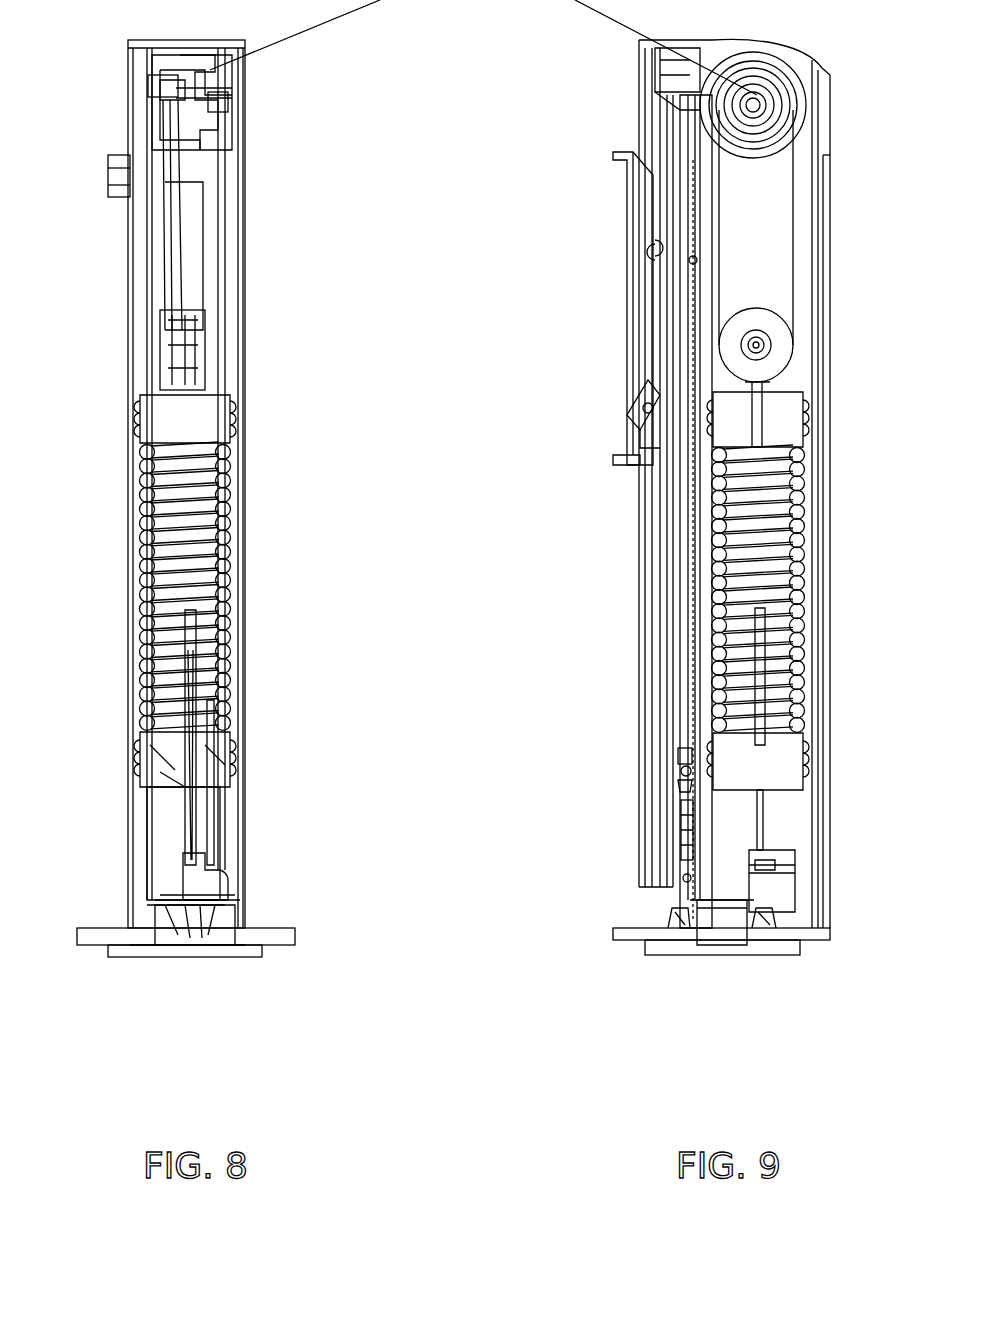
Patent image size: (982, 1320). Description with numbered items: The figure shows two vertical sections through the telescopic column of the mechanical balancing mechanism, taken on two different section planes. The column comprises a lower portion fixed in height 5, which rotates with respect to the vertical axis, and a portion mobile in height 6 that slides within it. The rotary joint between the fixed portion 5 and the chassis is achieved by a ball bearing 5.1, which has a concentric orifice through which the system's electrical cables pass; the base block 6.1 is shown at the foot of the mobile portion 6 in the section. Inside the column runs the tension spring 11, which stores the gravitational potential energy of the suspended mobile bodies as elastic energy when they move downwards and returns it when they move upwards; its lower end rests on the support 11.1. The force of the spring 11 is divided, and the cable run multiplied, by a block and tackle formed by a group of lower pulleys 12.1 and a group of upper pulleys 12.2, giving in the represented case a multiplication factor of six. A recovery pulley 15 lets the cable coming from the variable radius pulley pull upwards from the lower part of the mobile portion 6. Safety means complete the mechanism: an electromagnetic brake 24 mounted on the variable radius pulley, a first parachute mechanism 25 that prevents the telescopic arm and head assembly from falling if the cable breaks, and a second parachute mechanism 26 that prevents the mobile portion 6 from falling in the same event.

In FIG. 8, the lower portion fixed in height 5 is at (243, 578).
In FIG. 9, the lower portion fixed in height 5 is at (682, 497).
In FIG. 9, the ball bearing 5.1 is at (665, 921).
In FIG. 8, the portion mobile in height 6 is at (228, 212).
In FIG. 9, the portion mobile in height 6 is at (612, 215).
In FIG. 9, the guide rail base block 6.1 is at (718, 925).
In FIG. 8, the tension spring 11 is at (188, 518).
In FIG. 9, the tension spring 11 is at (740, 535).
In FIG. 8, the support 11.1 is at (228, 880).
In FIG. 9, the support 11.1 is at (763, 890).
In FIG. 9, the group of lower pulleys 12.1 is at (735, 322).
In FIG. 8, the group of upper pulleys 12.2 is at (165, 92).
In FIG. 9, the group of upper pulleys 12.2 is at (713, 92).
In FIG. 9, the recovery pulley 15 is at (680, 823).
In FIG. 8, the electromagnetic brake 24 is at (232, 122).
In FIG. 9, the first parachute mechanism 25 is at (640, 423).
In FIG. 9, the second parachute mechanism 26 is at (683, 768).